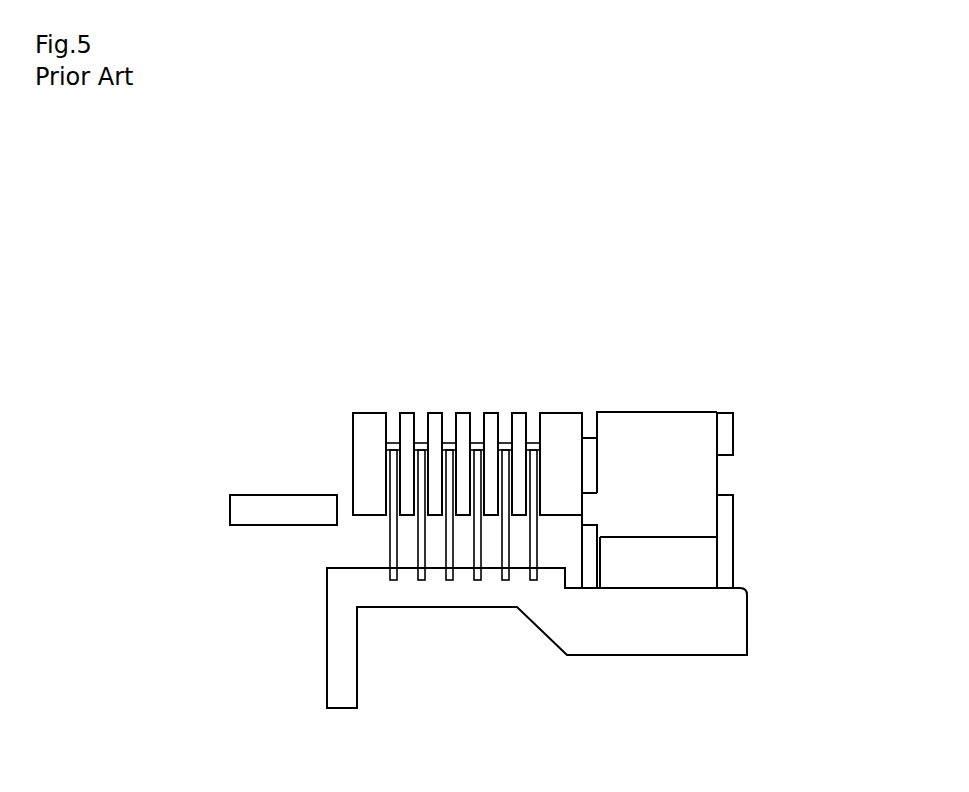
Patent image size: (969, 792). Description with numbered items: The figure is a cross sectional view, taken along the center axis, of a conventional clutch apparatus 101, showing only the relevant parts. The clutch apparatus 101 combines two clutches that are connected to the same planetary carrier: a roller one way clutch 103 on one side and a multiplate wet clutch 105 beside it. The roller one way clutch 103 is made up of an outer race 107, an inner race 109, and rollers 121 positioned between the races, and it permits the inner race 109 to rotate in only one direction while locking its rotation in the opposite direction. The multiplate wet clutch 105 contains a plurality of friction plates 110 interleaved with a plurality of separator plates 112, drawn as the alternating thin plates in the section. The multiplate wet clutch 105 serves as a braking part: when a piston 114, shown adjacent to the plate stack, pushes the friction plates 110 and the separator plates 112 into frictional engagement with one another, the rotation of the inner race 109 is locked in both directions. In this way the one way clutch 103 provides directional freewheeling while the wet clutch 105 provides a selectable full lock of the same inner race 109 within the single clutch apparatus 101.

The clutch apparatus 101 is at (598, 290).
The roller one way clutch 103 is at (698, 348).
The multiplate wet clutch 105 is at (374, 381).
The outer race 107 is at (698, 480).
The inner race 109 is at (727, 628).
The friction plates 110 is at (395, 550).
The separator plates 112 is at (437, 418).
The piston 114 is at (262, 508).
The rollers 121 is at (697, 565).